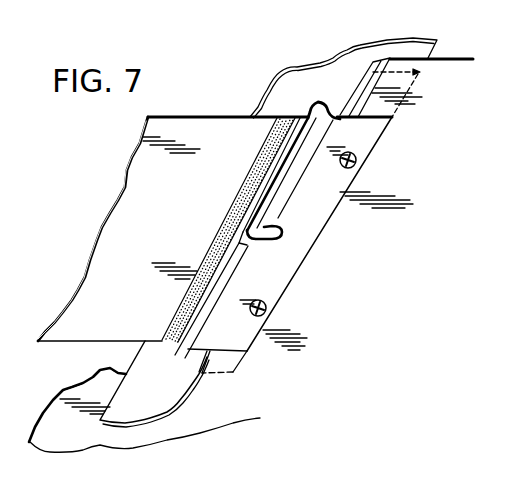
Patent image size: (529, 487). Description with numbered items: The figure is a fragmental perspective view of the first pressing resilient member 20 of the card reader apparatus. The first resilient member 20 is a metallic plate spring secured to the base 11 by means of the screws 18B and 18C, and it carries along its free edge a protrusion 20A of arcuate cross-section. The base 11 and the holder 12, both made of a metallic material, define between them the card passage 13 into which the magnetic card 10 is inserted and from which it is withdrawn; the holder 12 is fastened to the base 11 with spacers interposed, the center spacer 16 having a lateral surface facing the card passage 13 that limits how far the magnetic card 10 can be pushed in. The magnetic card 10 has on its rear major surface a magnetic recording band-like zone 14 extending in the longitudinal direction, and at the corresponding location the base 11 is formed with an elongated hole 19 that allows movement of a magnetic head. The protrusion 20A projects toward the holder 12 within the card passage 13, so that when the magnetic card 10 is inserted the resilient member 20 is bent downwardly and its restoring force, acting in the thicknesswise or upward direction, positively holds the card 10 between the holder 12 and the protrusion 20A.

The magnetic card 10 is at (128, 216).
The base 11 is at (415, 102).
The holder 12 is at (293, 72).
The card passage 13 is at (283, 97).
The magnetic recording band-like zone 14 is at (263, 159).
The center spacer 16 is at (373, 73).
The screw 18B is at (268, 311).
The screw 18C is at (357, 162).
The elongated hole 19 is at (180, 385).
The first resilient member 20 is at (298, 238).
The protrusion 20A is at (333, 98).